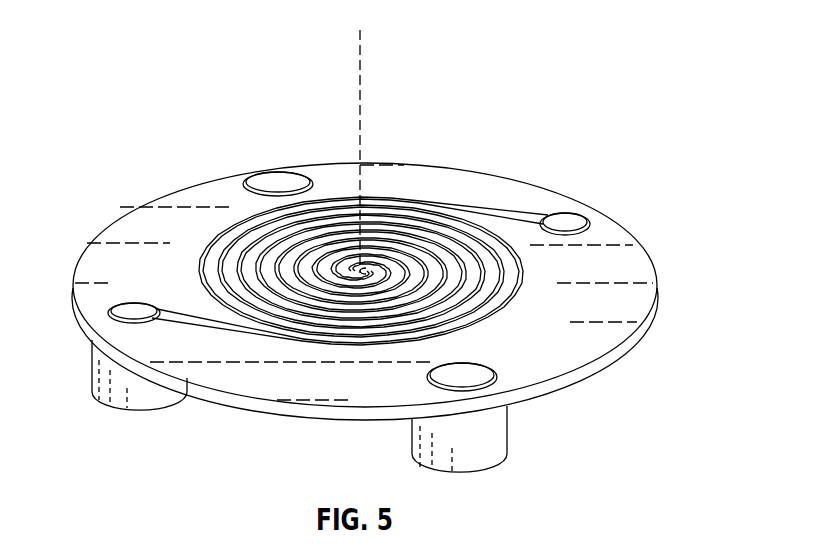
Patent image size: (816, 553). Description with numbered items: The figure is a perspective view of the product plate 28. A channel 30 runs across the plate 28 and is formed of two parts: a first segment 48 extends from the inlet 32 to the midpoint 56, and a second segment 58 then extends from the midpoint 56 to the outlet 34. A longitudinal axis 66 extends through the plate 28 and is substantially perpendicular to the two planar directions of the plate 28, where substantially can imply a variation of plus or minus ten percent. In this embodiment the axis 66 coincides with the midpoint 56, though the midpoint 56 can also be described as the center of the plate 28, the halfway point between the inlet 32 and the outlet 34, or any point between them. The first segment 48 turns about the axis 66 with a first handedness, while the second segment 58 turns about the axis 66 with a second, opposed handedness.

The product plate 28 is at (138, 104).
The channel 30 is at (160, 318).
The inlet 32 is at (137, 312).
The outlet 34 is at (566, 227).
The first segment 48 is at (273, 340).
The midpoint 56 is at (370, 273).
The second segment 58 is at (508, 212).
The longitudinal axis 66 is at (368, 70).